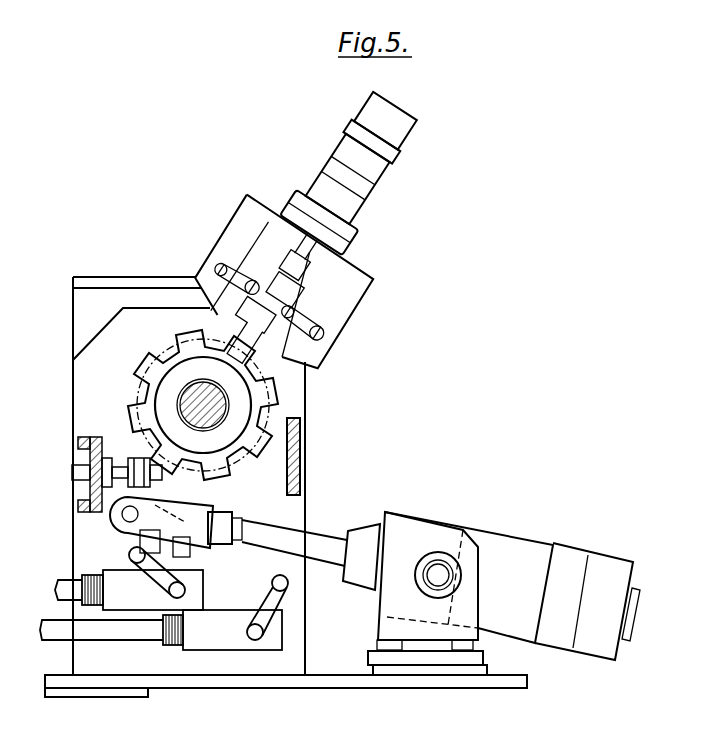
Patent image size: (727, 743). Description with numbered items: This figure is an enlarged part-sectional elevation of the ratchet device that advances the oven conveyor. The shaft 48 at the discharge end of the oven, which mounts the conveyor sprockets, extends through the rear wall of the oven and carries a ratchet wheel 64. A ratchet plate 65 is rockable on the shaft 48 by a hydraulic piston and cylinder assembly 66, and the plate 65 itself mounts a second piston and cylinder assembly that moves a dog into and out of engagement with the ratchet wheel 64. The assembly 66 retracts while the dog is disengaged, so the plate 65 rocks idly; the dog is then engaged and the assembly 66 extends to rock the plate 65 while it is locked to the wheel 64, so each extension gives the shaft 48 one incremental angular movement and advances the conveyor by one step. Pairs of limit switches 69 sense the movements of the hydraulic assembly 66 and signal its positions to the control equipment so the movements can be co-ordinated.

The shaft 48 is at (215, 409).
The ratchet wheel 64 is at (275, 423).
The ratchet plate 65 is at (173, 492).
The hydraulic piston and cylinder assembly 66 is at (502, 568).
The limit switches 69 is at (220, 635).